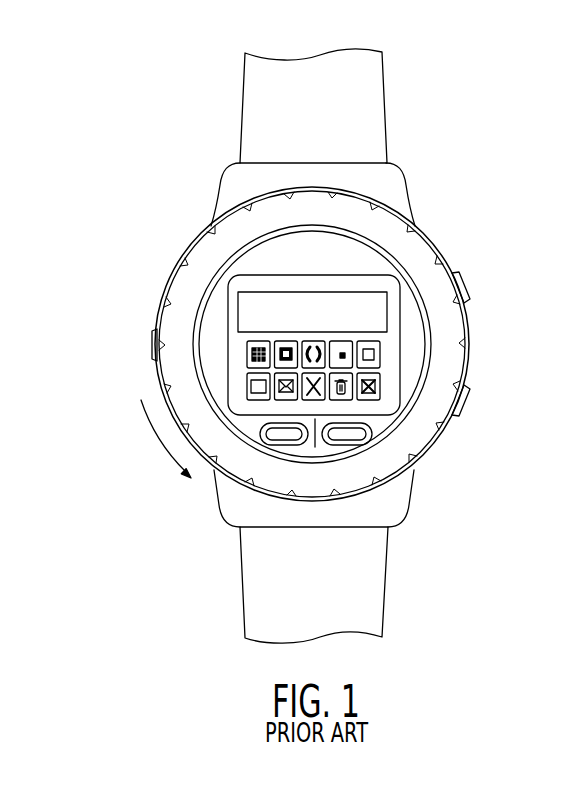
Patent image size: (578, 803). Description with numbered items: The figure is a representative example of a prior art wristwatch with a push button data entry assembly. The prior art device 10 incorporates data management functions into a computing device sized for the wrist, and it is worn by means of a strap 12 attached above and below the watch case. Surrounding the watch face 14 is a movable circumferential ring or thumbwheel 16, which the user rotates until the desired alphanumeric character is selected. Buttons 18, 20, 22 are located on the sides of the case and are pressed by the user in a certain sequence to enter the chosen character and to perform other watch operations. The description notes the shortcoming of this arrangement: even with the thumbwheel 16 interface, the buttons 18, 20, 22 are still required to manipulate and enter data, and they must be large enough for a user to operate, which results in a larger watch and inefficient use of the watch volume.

The prior art device 10 is at (286, 346).
The strap 12 is at (252, 137).
The watch face 14 is at (380, 265).
The thumbwheel 16 is at (204, 244).
The button 18 is at (153, 333).
The button 20 is at (467, 286).
The button 22 is at (468, 408).